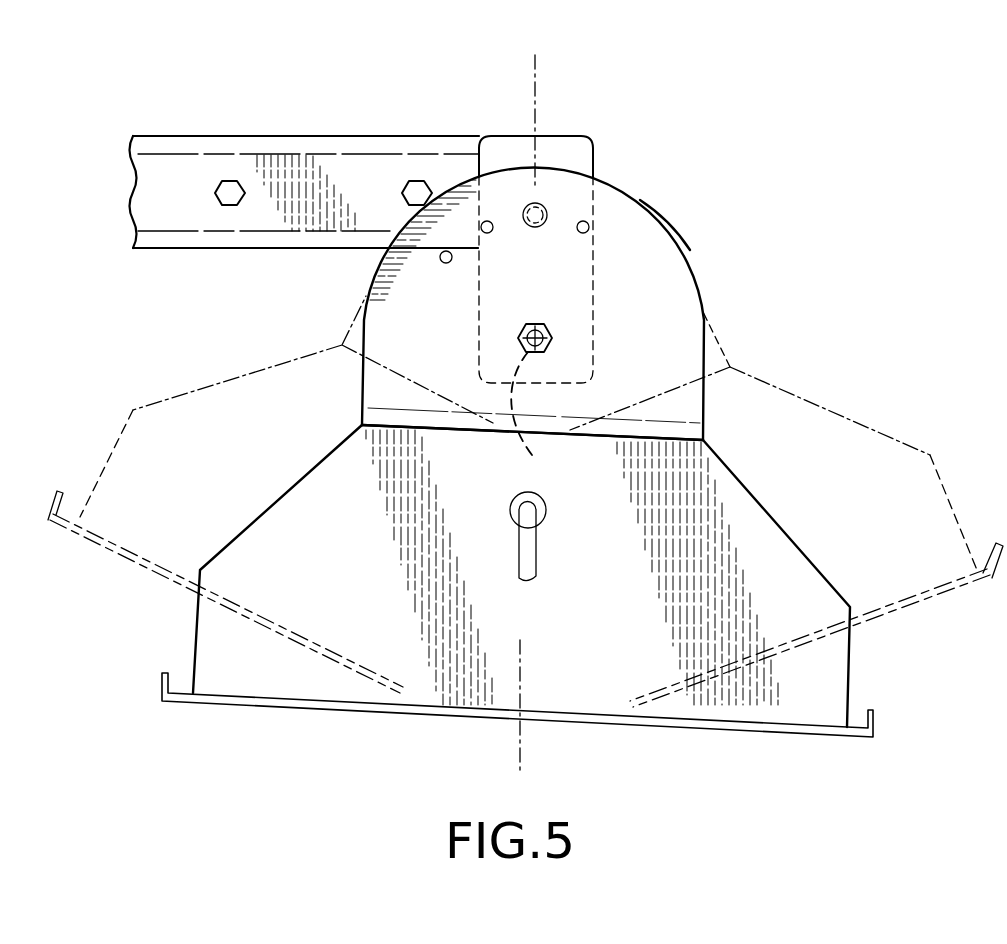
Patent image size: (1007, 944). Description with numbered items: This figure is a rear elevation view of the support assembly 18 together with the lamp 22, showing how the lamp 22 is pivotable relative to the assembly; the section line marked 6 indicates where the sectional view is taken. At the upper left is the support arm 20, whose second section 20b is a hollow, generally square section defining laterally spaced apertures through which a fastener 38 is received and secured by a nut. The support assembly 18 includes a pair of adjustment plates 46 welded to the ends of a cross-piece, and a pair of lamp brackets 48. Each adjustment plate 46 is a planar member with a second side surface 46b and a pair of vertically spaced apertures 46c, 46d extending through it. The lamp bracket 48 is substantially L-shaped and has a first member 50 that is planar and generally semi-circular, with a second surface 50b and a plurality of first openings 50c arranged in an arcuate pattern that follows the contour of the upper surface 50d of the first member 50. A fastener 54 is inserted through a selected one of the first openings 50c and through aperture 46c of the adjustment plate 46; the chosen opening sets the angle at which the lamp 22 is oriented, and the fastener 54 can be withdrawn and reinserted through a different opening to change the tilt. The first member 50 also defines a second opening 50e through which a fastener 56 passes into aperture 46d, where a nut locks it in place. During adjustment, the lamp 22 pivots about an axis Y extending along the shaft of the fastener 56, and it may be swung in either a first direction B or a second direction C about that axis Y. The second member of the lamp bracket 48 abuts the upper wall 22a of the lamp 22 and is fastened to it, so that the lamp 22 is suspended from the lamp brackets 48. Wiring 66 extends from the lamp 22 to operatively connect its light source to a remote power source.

The support assembly 18 is at (723, 130).
The support arm 20 is at (305, 144).
The second section 20b is at (292, 142).
The lamp 22 is at (779, 521).
The upper wall 22a is at (413, 427).
The fastener 38 is at (230, 185).
The adjustment plate 46 is at (591, 233).
The second side surface 46b is at (558, 140).
The aperture 46c is at (549, 213).
The aperture 46d is at (530, 416).
The lamp bracket 48 is at (594, 302).
The first member 50 is at (687, 262).
The second surface 50b is at (610, 284).
The first openings 50c is at (492, 233).
The upper surface 50d is at (668, 227).
The second opening 50e is at (530, 416).
The fastener 54 is at (542, 203).
The fastener 56 is at (535, 322).
The wiring 66 is at (537, 553).
The section line 6- 6 is at (535, 55).
The first direction B is at (424, 296).
The second direction C is at (652, 302).
The axis Y is at (548, 331).